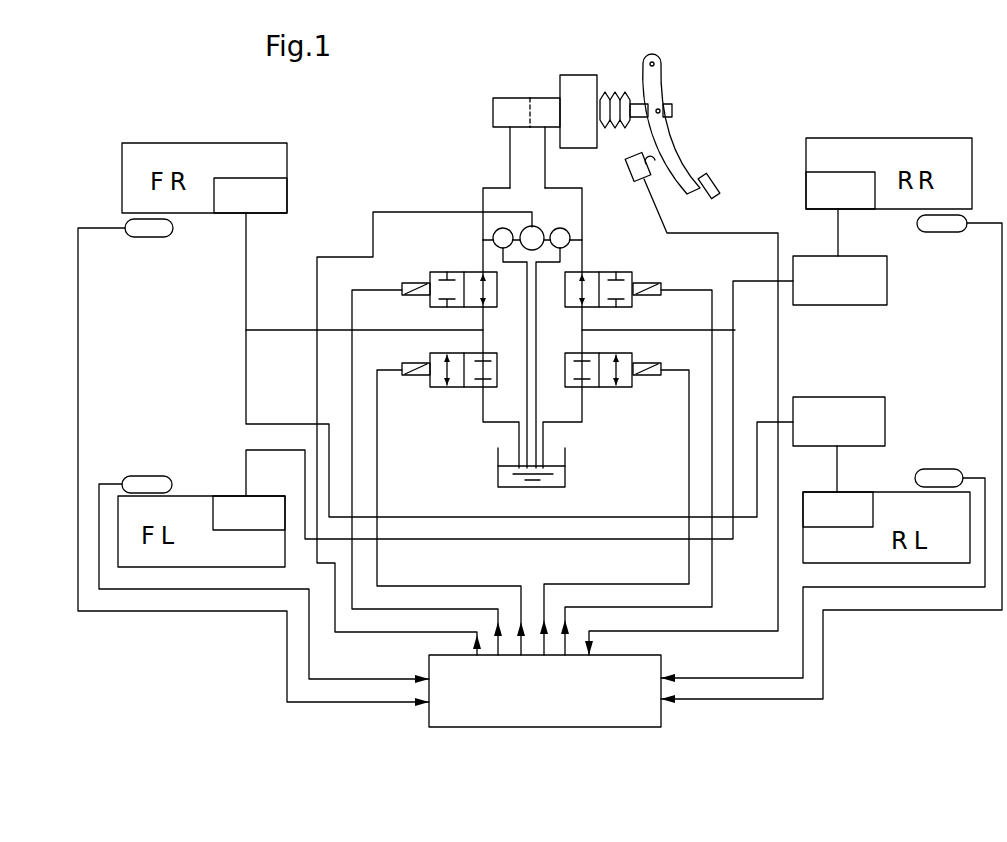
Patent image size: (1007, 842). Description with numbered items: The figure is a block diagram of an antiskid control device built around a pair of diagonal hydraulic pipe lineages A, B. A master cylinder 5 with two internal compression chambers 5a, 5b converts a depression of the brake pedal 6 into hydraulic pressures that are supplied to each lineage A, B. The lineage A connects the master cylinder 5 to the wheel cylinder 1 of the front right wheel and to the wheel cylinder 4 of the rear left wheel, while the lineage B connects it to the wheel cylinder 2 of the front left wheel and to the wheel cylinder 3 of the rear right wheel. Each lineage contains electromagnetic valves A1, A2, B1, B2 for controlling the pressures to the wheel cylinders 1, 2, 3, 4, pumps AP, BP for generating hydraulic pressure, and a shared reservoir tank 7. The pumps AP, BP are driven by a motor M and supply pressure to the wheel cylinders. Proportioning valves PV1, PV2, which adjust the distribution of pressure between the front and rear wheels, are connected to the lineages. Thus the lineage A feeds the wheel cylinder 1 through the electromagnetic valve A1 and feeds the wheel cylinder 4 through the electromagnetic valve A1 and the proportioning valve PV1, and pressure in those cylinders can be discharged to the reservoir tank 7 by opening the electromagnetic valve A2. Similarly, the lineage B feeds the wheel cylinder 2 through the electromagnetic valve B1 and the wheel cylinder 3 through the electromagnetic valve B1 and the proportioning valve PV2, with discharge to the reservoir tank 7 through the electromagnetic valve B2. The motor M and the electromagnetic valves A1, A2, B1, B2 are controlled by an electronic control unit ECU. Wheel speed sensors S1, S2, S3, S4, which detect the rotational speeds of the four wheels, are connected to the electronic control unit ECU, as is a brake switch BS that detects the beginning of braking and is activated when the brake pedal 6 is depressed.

The wheel cylinder of front right wheel 1 is at (287, 195).
The wheel cylinder of front left wheel 2 is at (232, 495).
The wheel cylinder of rear right wheel 3 is at (806, 193).
The wheel cylinder of rear left wheel 4 is at (868, 490).
The master cylinder 5 is at (533, 77).
The internal compression chamber 5a is at (505, 103).
The internal compression chamber 5b is at (548, 108).
The brake pedal 6 is at (658, 88).
The reservoir tank 7 is at (566, 468).
The hydraulic pipe lineage A is at (510, 150).
The hydraulic pipe lineage B is at (546, 166).
The motor M is at (523, 227).
The pump AP is at (497, 229).
The pump BP is at (575, 227).
The brake switch BS is at (637, 179).
The electromagnetic valve A1 is at (427, 449).
The electromagnetic valve A2 is at (451, 504).
The electromagnetic valve B1 is at (636, 449).
The electromagnetic valve B2 is at (614, 504).
The wheel speed sensor S1 is at (253, 462).
The wheel speed sensor S2 is at (264, 565).
The wheel speed sensor S3 is at (831, 459).
The wheel speed sensor S4 is at (823, 562).
The proportioning valve PV1 is at (839, 444).
The proportioning valve PV2 is at (840, 257).
The electronic control unit ECU is at (545, 691).